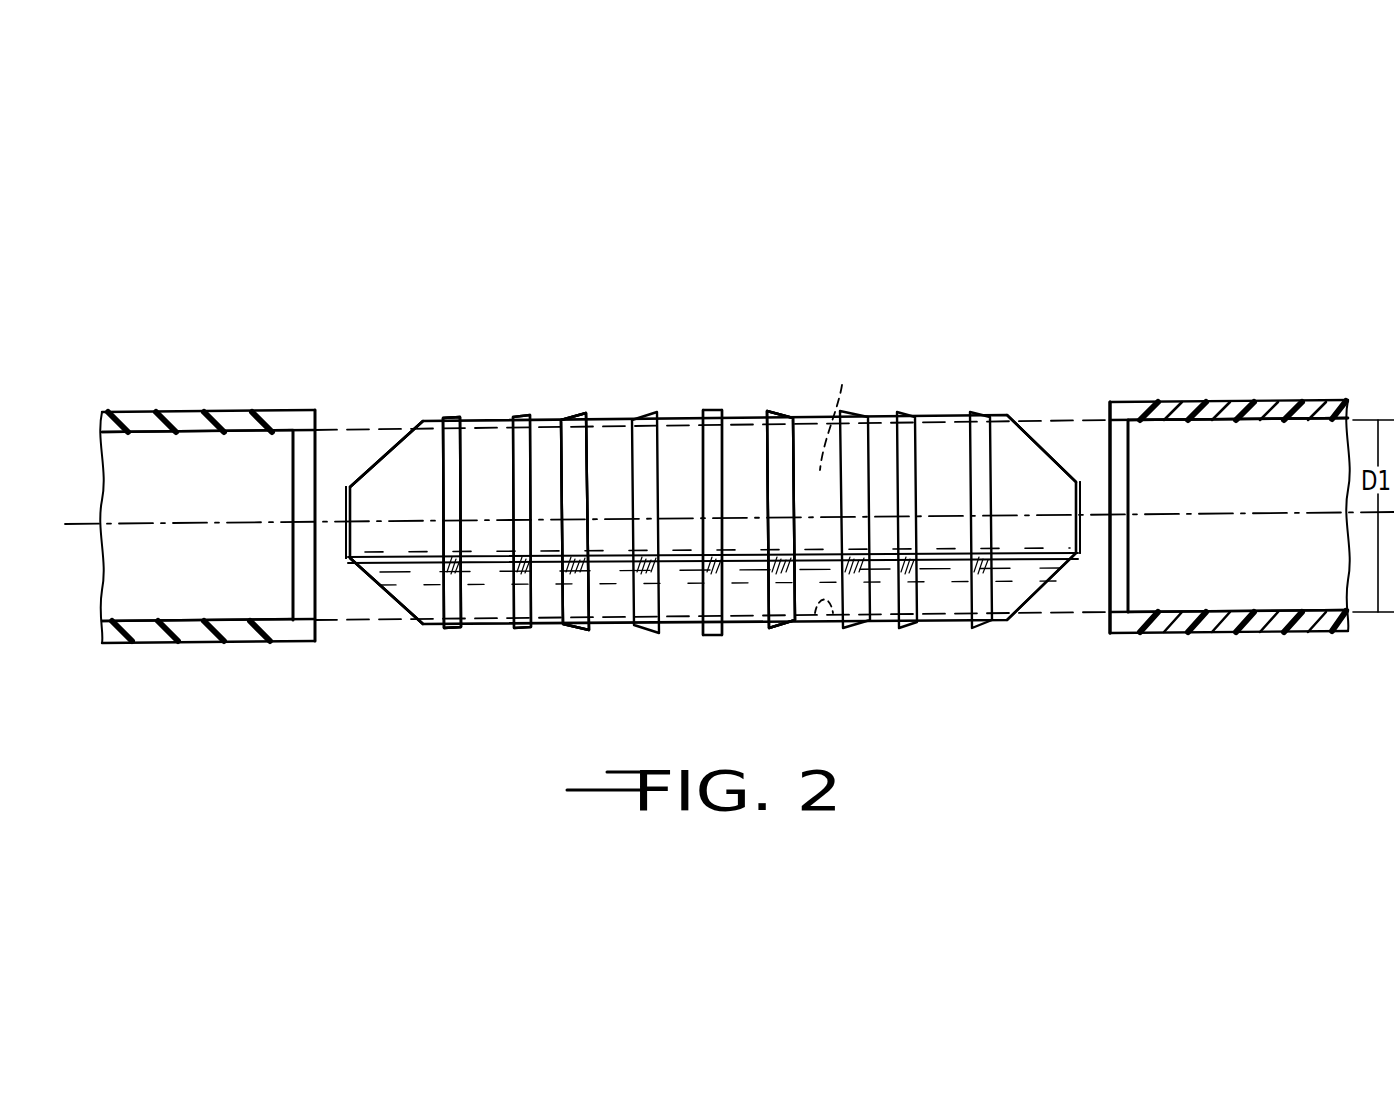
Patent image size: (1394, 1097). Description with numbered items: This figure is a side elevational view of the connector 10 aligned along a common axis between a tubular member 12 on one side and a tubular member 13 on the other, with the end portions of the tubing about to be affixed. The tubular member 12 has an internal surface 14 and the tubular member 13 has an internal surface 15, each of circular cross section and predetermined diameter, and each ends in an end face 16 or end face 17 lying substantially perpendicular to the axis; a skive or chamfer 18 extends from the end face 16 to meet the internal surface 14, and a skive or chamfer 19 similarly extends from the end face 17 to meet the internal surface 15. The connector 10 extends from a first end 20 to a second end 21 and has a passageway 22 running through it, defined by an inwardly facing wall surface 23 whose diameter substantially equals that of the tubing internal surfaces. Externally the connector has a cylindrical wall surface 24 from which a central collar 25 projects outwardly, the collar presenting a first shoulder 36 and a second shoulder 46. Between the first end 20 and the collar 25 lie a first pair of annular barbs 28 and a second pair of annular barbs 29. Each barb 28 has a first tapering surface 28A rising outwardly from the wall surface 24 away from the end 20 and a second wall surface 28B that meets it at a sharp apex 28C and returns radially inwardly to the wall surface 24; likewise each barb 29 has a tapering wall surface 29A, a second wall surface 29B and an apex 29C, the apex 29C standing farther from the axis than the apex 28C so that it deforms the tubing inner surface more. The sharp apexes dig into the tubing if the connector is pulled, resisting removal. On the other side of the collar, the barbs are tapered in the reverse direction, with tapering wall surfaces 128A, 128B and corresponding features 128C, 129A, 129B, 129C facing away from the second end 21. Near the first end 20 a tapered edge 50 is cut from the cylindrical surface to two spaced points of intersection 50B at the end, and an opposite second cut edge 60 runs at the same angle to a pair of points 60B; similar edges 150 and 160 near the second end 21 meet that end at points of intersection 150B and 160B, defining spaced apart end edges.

The connector 10 is at (826, 378).
The tubular member 12 is at (183, 410).
The tubular member 13 is at (1210, 398).
The internal surface 14 is at (130, 620).
The internal surface 15 is at (1230, 611).
The end face 16 is at (313, 416).
The end face 17 is at (1110, 403).
The skive or chamfer 18 is at (307, 577).
The skive or chamfer 19 is at (1122, 490).
The first end 20 is at (345, 503).
The second end 21 is at (1130, 458).
The passageway 22 is at (853, 372).
The inwardly facing wall surface 23 is at (833, 614).
The cylindrical wall surface 24 is at (612, 416).
The central collar 25 is at (717, 408).
The first pair of annular barbs 28 is at (527, 417).
The first tapering surface 28A is at (450, 417).
The second wall surface 28B is at (457, 628).
The apex 28C is at (462, 409).
The second pair of annular barbs 29 is at (570, 417).
The first tapering wall surface 29A is at (520, 629).
The second wall surface 29B is at (613, 650).
The apex 29C is at (585, 415).
The first shoulder 36 is at (702, 412).
The second shoulder 46 is at (727, 412).
The tapered edge 50 is at (381, 458).
The points of intersection 50B is at (345, 428).
The second cut edge 60 is at (395, 596).
The points 60B is at (348, 560).
The tapering wall surface 128A is at (903, 411).
The tapering wall surface 128B is at (980, 415).
The fin lower portion 128C is at (975, 628).
The fin lower portion 129A is at (783, 631).
The fin lower portion 129B is at (767, 629).
The fin 129C is at (767, 410).
The edge 150 is at (1033, 440).
The points of intersection 150B is at (1074, 470).
The edge 160 is at (1033, 620).
The points of intersection 160B is at (1108, 563).